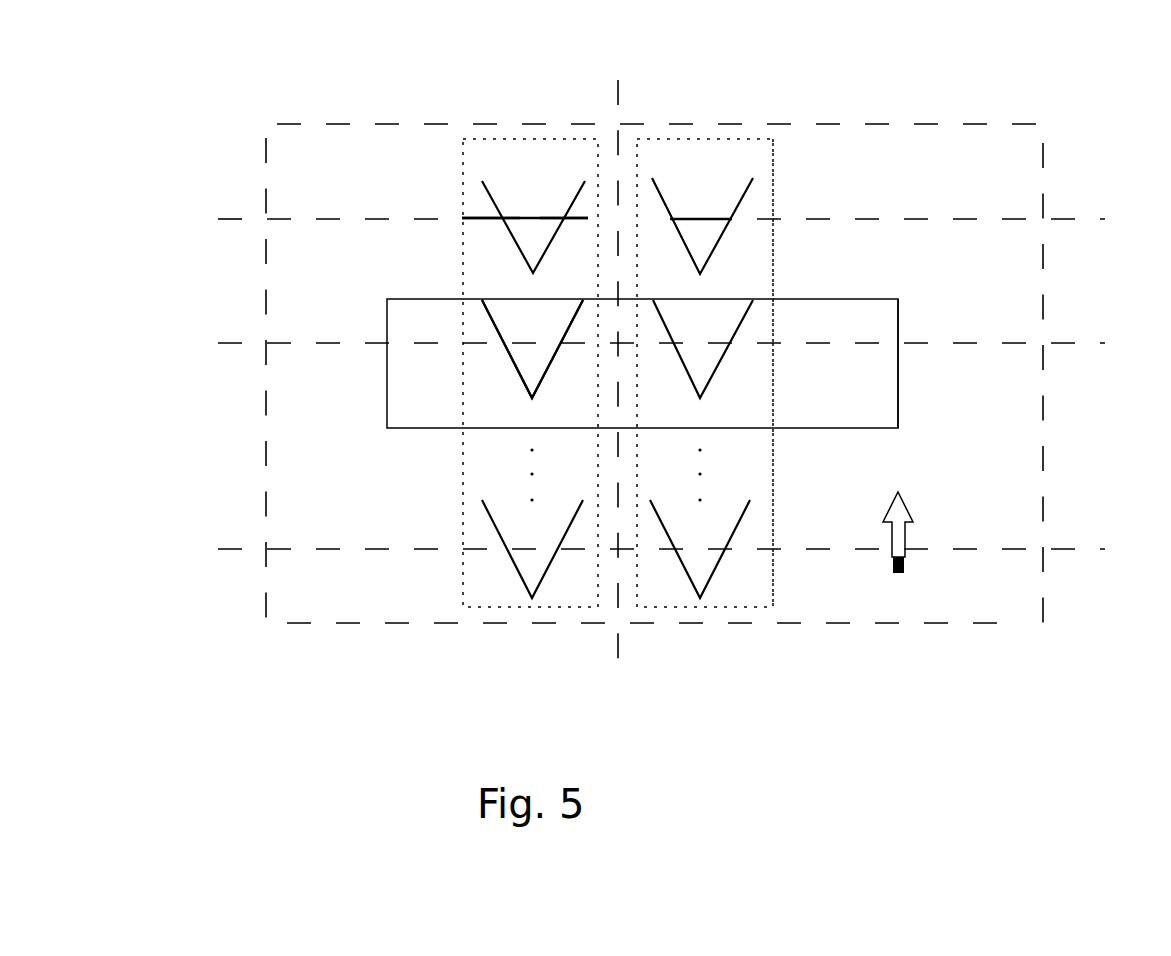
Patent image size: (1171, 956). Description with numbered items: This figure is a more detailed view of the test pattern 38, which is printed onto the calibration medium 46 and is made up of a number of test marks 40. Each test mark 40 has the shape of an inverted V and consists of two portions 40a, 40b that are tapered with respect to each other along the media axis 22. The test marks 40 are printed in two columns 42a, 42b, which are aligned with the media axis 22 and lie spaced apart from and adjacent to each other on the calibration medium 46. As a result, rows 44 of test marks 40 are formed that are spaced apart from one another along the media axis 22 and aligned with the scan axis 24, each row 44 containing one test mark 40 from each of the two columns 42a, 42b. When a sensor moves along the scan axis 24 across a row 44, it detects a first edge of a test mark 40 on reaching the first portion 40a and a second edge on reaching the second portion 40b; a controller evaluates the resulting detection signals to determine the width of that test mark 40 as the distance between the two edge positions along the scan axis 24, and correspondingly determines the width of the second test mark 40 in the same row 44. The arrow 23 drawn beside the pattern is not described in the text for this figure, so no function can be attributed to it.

The media axis 22 is at (621, 398).
The direction of movement arrow 23 is at (905, 543).
The scan axis 24 is at (775, 363).
The test pattern 38 is at (773, 557).
The test mark 40 is at (517, 369).
The first portion of test mark 40a is at (495, 218).
The second portion of test mark 40b is at (578, 218).
The first column of test marks 42a is at (518, 607).
The second column of test marks 42b is at (725, 607).
The row of test marks 44 is at (898, 372).
The calibration medium 46 is at (303, 623).